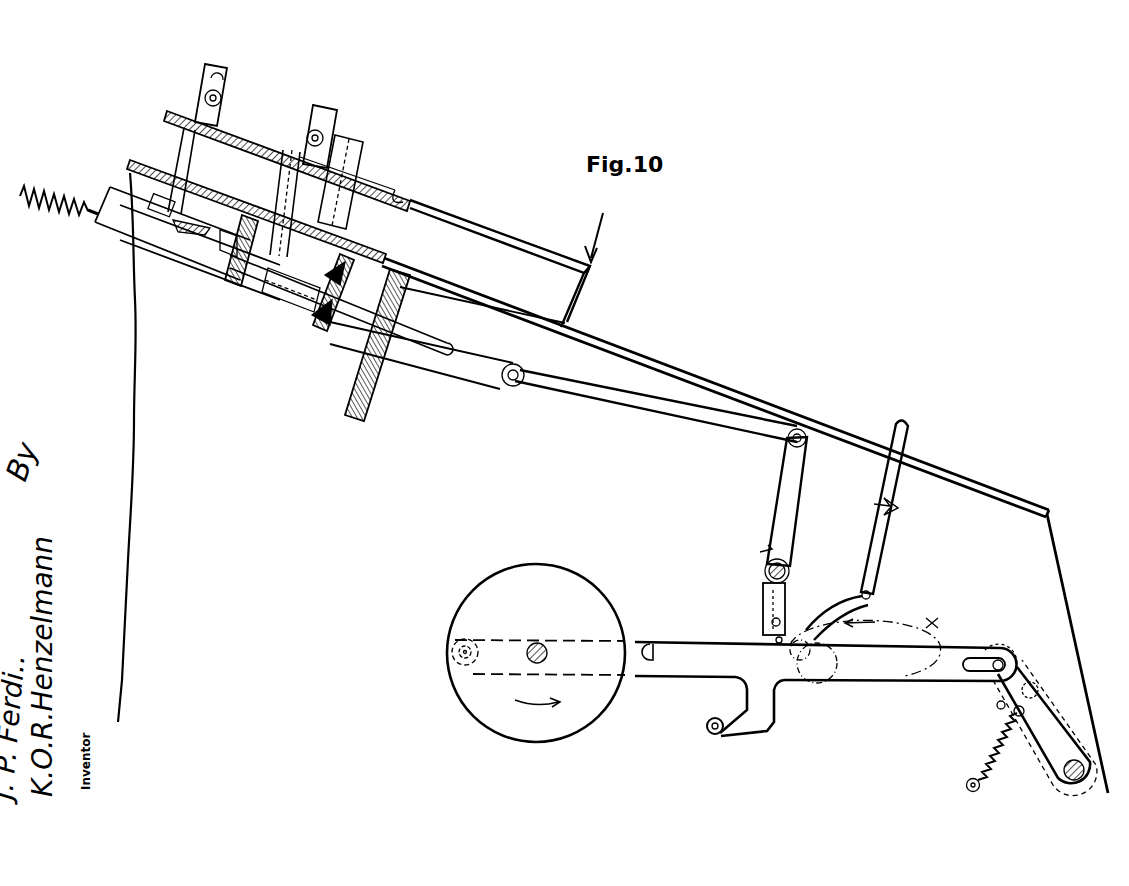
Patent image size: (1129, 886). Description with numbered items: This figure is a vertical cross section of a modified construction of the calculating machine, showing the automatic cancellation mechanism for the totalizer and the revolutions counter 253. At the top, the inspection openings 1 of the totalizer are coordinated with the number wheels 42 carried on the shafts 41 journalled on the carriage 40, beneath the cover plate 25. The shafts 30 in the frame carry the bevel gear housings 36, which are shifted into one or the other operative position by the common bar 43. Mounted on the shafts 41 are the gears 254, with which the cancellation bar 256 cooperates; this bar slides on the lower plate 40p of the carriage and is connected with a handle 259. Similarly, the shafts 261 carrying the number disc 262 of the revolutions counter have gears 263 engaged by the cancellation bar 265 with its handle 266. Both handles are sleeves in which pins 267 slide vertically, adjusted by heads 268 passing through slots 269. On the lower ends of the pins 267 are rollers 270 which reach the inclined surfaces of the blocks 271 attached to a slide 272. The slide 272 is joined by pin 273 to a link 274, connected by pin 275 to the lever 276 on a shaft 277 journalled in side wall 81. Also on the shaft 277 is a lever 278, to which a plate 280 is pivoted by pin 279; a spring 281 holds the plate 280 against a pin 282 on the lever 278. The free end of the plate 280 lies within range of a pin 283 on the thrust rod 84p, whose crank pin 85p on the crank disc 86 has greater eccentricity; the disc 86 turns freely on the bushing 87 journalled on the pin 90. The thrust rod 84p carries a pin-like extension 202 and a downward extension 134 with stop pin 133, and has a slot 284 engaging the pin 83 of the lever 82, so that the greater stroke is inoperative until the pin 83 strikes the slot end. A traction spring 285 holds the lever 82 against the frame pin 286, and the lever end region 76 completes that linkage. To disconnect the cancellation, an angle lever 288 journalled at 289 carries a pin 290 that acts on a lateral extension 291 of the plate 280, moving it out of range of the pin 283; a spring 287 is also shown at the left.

The inspection openings 1 is at (363, 193).
The cover plate 25 is at (497, 243).
The shafts 30 is at (360, 323).
The bevel gear housings 36 is at (307, 313).
The carriage 40 is at (412, 203).
The lower plate of the carriage 40p is at (385, 258).
The shafts 41 is at (320, 227).
The number wheel 42 is at (390, 193).
The common bar 43 is at (275, 300).
The lever end roller 76 is at (1052, 704).
The side wall 81 is at (832, 455).
The lever 82 is at (1020, 680).
The pin 83 is at (1008, 650).
The thrust rod 84p is at (690, 670).
The crank pin 85p is at (453, 672).
The disc 86 is at (598, 597).
The bushing 87 is at (532, 650).
The pin 90 is at (535, 658).
The stop pin 133 is at (710, 729).
The downwardly directed extension 134 is at (770, 710).
The pin-like extension 202 is at (652, 650).
The revolutions counter 253 is at (260, 153).
The gears 254 is at (320, 252).
The cancellation bar 256 is at (252, 270).
The handle 259 is at (325, 107).
The shafts 261 is at (213, 175).
The number disc 262 is at (284, 137).
The gears 263 is at (200, 257).
The cancellation bar 265 is at (132, 186).
The handle 266 is at (207, 78).
The pins 267 is at (223, 115).
The heads 268 is at (222, 98).
The slots 269 is at (222, 83).
The rollers 270 is at (167, 243).
The blocks 271 is at (130, 233).
The slide 272 is at (187, 257).
The pin 273 is at (516, 386).
The link 274 is at (658, 415).
The pin 275 is at (790, 443).
The lever 276 is at (797, 498).
The shaft 277 is at (790, 570).
The lever 278 is at (790, 610).
The pin 279 is at (770, 623).
The plate 280 is at (773, 637).
The spring 281 is at (787, 587).
The pin 282 is at (793, 590).
The pin 283 is at (828, 680).
The slot 284 is at (972, 661).
The traction spring 285 is at (993, 747).
The pin 286 is at (997, 705).
The spring 287 is at (30, 210).
The angle lever 288 is at (880, 547).
The journal 289 is at (870, 595).
The pin 290 is at (797, 640).
The lateral extension 291 is at (806, 607).